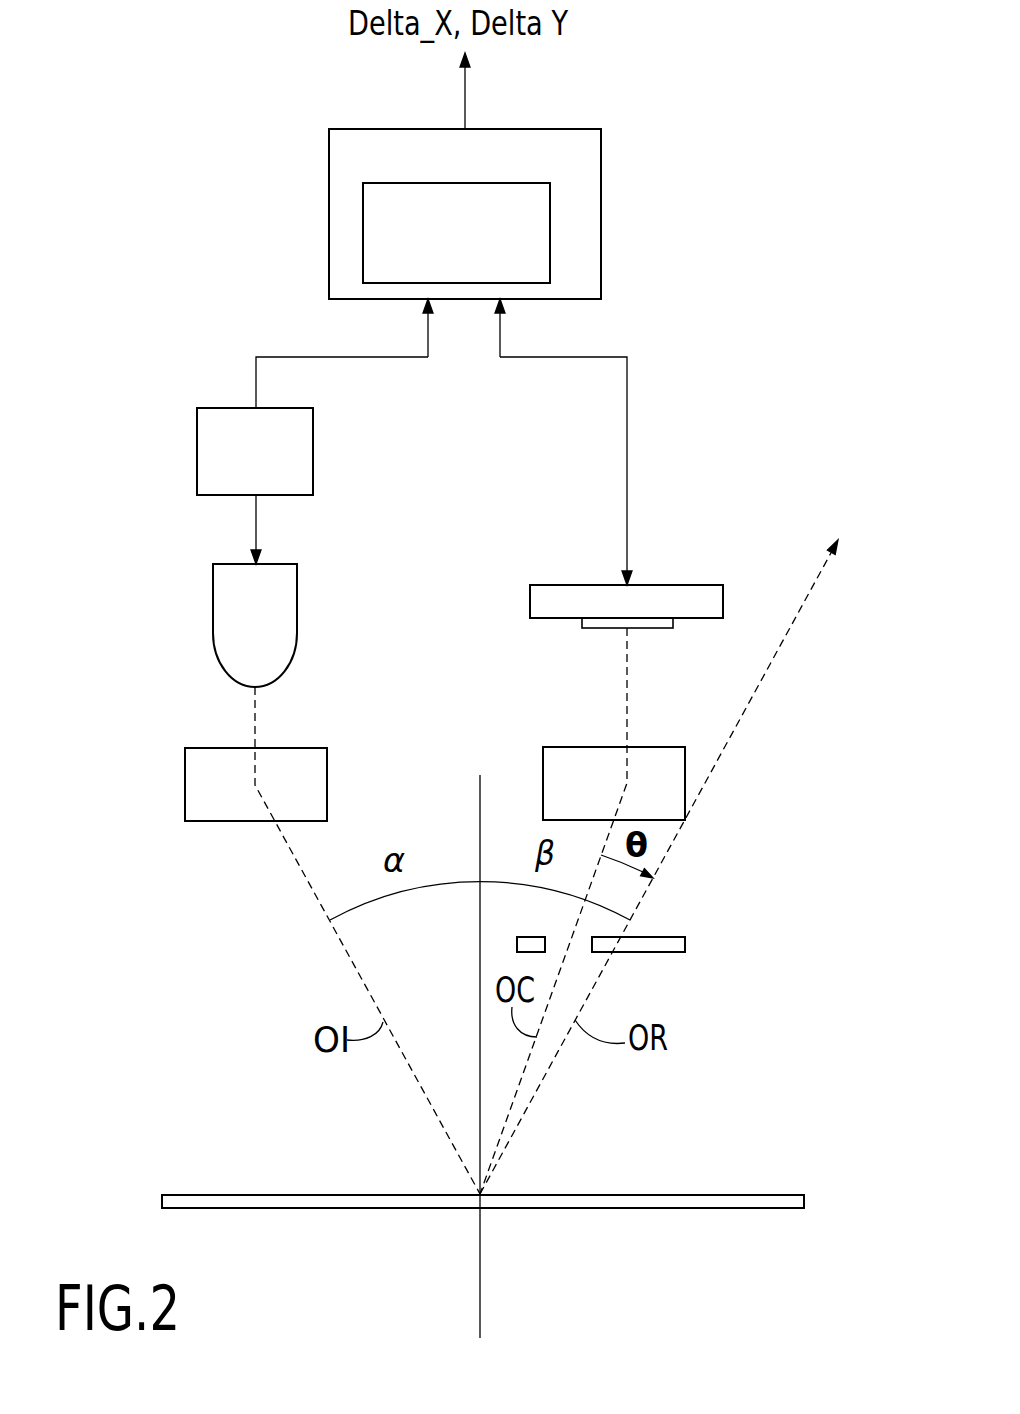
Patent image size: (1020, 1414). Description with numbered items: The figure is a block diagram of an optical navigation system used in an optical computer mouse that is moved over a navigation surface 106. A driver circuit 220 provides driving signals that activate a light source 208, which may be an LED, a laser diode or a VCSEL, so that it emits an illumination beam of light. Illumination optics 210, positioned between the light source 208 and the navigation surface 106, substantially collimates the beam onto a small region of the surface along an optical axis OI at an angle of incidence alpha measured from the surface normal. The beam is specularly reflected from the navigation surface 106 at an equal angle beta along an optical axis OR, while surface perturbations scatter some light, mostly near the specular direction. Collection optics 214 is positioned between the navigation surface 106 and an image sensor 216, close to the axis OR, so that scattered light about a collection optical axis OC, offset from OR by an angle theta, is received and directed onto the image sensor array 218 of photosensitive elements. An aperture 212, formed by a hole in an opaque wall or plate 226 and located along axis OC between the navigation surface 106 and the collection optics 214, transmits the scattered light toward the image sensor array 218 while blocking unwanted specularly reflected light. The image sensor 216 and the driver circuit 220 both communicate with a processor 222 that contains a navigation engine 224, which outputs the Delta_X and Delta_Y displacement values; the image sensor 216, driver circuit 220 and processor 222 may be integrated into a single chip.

The navigation surface 106 is at (762, 1196).
The light source 208 is at (297, 605).
The illumination optics 210 is at (283, 748).
The aperture 212 is at (557, 945).
The collection optics 214 is at (670, 747).
The image sensor 216 is at (698, 585).
The image sensor array 218 is at (588, 630).
The driver circuit 220 is at (313, 443).
The processor 222 is at (601, 157).
The navigation engine 224 is at (550, 257).
The opaque wall or plate 226 is at (668, 937).